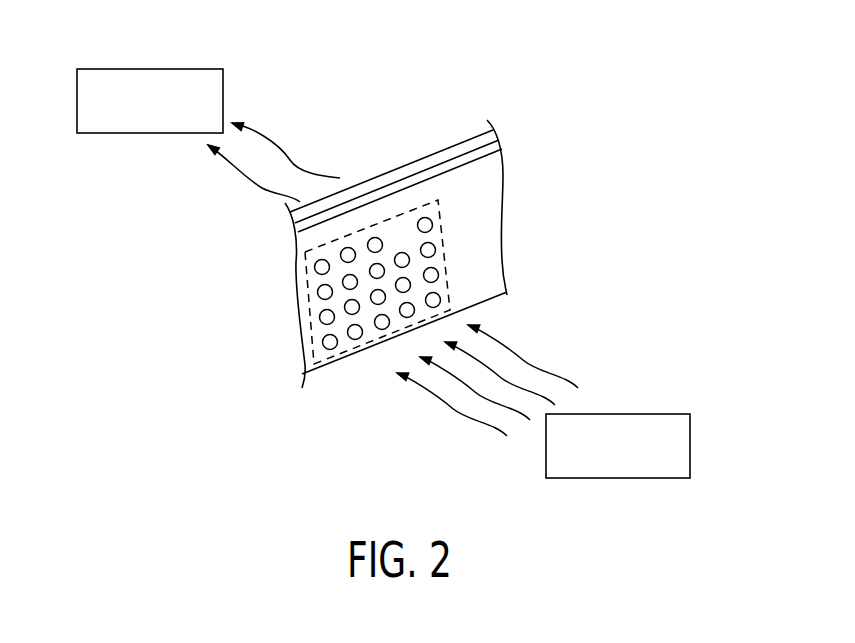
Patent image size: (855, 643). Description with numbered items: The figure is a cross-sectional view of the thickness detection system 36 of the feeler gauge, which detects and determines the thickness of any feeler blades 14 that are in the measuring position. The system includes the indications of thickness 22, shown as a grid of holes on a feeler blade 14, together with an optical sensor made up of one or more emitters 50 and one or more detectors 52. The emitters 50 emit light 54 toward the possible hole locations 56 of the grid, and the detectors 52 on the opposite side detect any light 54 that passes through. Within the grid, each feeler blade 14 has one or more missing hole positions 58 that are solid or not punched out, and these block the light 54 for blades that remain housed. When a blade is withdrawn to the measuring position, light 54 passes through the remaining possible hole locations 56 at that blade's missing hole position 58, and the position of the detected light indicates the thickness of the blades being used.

The feeler blade 14 is at (458, 168).
The indications of thickness 22 is at (302, 363).
The thickness detection system 36 is at (633, 88).
The emitter 50 is at (619, 414).
The detector 52 is at (150, 69).
The light 54 is at (290, 161).
The possible hole location 56 is at (318, 296).
The missing hole position 58 is at (398, 233).